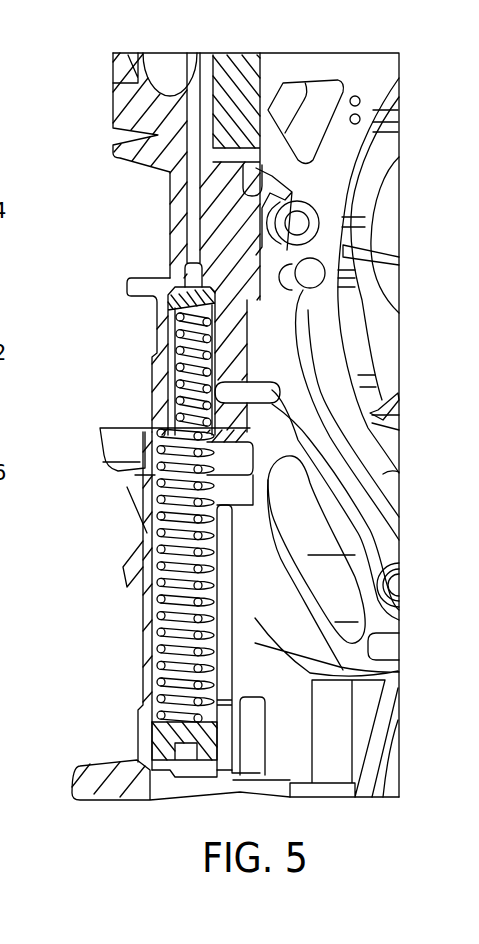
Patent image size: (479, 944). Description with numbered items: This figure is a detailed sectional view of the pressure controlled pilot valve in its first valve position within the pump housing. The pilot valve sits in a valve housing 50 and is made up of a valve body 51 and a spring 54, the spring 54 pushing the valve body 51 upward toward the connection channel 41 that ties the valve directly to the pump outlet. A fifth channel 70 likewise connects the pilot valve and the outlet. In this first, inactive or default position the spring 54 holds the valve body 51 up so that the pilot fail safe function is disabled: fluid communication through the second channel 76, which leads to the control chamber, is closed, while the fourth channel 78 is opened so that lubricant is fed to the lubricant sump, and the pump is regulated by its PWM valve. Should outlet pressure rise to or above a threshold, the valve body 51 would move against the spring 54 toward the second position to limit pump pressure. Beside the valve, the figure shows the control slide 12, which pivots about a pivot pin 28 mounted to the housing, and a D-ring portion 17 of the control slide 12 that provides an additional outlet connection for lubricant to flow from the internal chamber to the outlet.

The connection channel 41 is at (150, 70).
The D-ring portion 17 is at (315, 67).
The fifth channel 70 is at (194, 222).
The pivot pin 28 is at (313, 272).
The valve body 51 is at (160, 338).
The second channel 76 is at (222, 392).
The control slide 12 is at (385, 470).
The fourth channel 78 is at (232, 462).
The valve housing 50 is at (143, 645).
The spring 54 is at (398, 672).